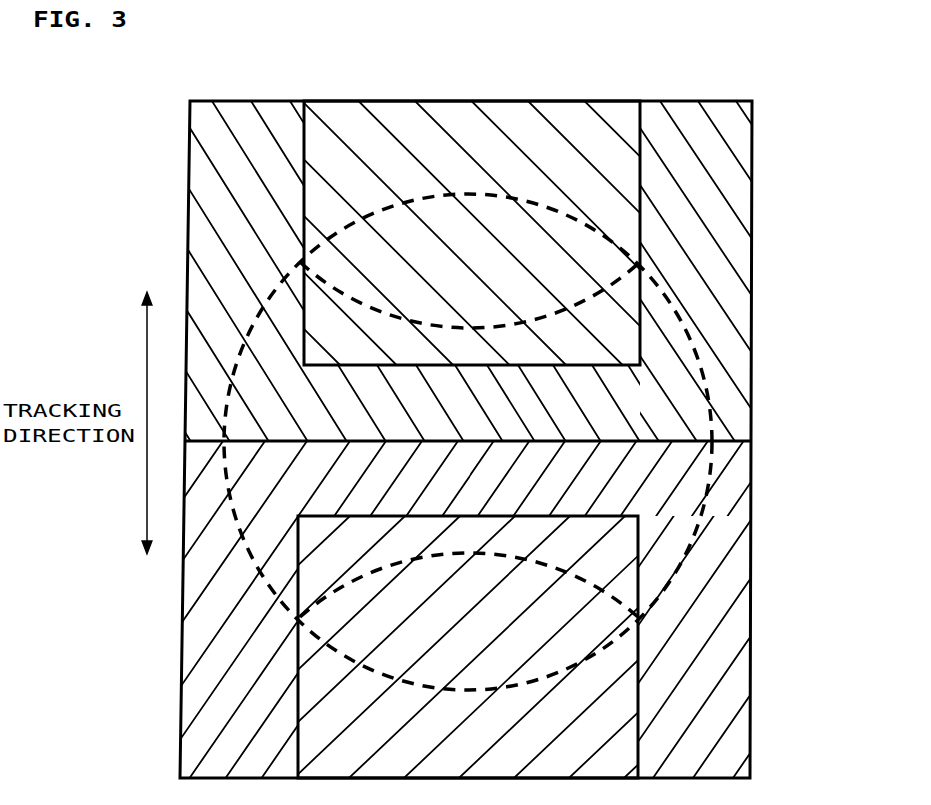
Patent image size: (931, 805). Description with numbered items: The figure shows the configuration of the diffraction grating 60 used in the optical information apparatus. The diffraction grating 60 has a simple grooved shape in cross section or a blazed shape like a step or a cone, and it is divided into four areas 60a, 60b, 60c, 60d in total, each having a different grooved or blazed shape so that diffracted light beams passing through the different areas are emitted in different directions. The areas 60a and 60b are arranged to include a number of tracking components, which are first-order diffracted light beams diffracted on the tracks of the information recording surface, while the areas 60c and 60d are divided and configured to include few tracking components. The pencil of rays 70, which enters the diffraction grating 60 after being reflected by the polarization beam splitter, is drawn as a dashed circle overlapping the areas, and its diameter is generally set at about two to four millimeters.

The diffraction grating 60 is at (540, 97).
The area 60a is at (557, 690).
The area 60b is at (433, 182).
The area 60c is at (233, 640).
The area 60d is at (228, 300).
The pencil of rays 70 is at (682, 558).